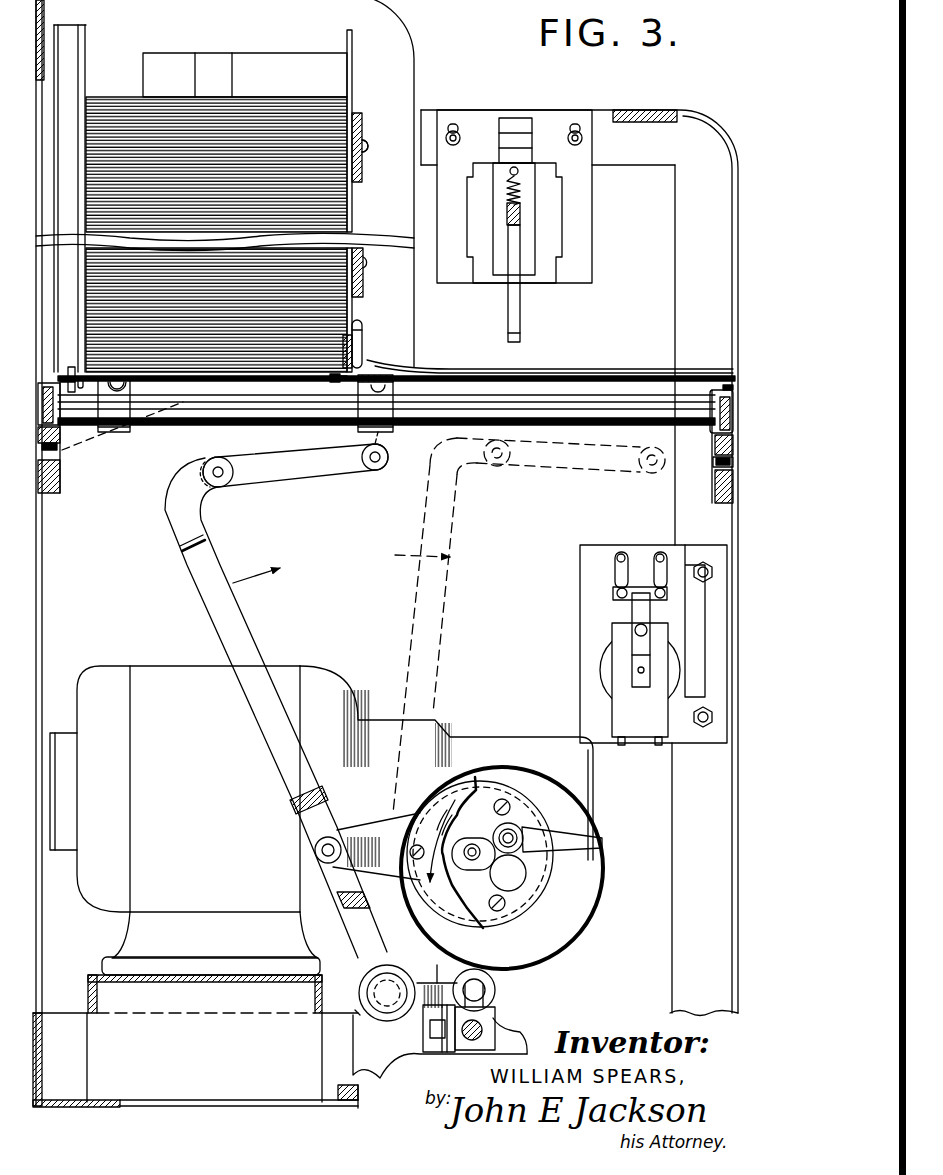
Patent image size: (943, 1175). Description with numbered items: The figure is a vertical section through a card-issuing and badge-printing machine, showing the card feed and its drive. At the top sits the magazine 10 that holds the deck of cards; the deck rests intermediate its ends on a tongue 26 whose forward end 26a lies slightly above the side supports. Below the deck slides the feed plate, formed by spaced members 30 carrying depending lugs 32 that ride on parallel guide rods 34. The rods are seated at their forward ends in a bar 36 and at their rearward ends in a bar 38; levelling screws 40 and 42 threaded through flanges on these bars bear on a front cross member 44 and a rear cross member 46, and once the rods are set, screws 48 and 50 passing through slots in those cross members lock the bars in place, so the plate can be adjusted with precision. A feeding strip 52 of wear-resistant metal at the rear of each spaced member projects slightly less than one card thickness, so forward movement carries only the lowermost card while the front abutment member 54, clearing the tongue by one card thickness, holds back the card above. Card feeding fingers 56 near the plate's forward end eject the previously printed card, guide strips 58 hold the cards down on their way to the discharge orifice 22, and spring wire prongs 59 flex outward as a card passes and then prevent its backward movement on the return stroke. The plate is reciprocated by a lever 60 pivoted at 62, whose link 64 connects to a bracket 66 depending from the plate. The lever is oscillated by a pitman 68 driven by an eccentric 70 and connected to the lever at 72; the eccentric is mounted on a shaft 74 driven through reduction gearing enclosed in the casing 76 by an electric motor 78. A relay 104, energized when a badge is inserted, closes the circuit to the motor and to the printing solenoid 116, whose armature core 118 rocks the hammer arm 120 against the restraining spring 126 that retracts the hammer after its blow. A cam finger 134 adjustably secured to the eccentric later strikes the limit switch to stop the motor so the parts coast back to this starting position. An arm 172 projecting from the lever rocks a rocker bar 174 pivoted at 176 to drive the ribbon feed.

The magazine 10 is at (372, 73).
The discharge orifice 22 is at (735, 378).
The tongue 26 is at (283, 377).
The forward end of the tongue 26a is at (348, 380).
The spaced members 30 is at (215, 377).
The depending lugs 32 is at (125, 428).
The guide rods 34 is at (167, 415).
The bar 36 is at (710, 440).
The bar 38 is at (57, 430).
The levelling screws 40 is at (735, 420).
The levelling screws 42 is at (45, 400).
The front cross member 44 is at (735, 445).
The rear cross member 46 is at (45, 442).
The screws 48 is at (735, 462).
The screws 50 is at (45, 457).
The feeding strip 52 is at (68, 367).
The front abutment member 54 is at (350, 308).
The card feeding fingers 56 is at (362, 352).
The guide strips 58 is at (445, 368).
The spring wire prongs 59 is at (361, 335).
The lever 60 is at (208, 594).
The pivot 62 is at (383, 1000).
The link 64 is at (268, 473).
The bracket 66 is at (372, 472).
The pitman 68 is at (375, 832).
The eccentric 70 is at (452, 790).
The pitman connection 72 is at (315, 851).
The shaft 74 is at (516, 878).
The casing 76 is at (525, 745).
The electric motor 78 is at (207, 758).
The relay 104 is at (605, 665).
The printing solenoid 116 is at (552, 202).
The armature core 118 is at (515, 130).
The arm 120 is at (512, 305).
The spring 126 is at (509, 198).
The cam finger 134 is at (572, 838).
The arm 172 is at (440, 975).
The rocker bar 174 is at (480, 995).
The pivot 176 is at (490, 1027).